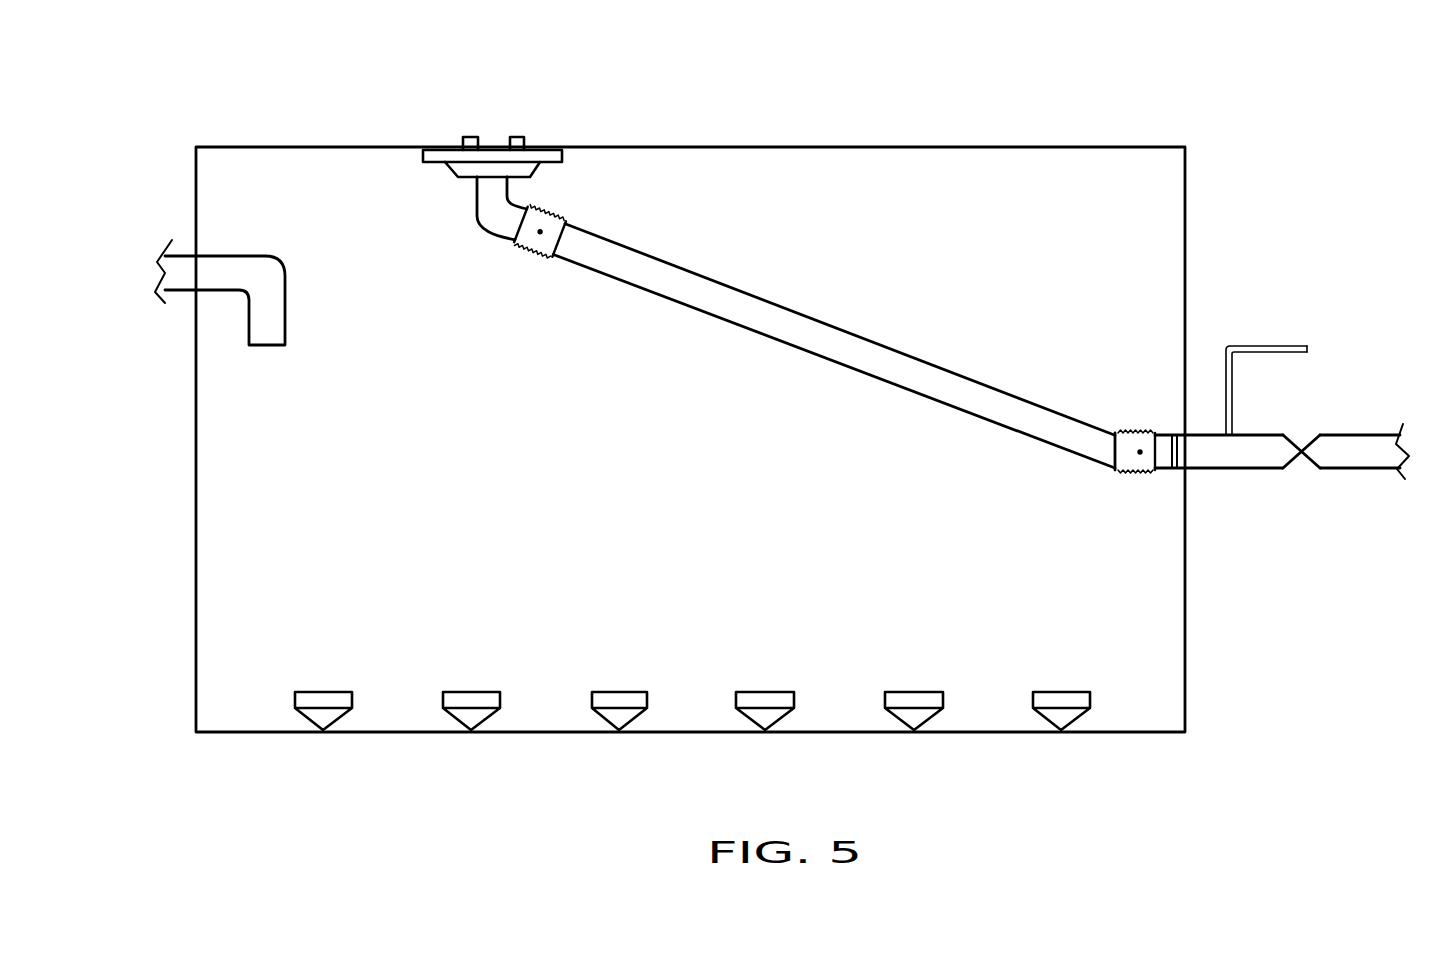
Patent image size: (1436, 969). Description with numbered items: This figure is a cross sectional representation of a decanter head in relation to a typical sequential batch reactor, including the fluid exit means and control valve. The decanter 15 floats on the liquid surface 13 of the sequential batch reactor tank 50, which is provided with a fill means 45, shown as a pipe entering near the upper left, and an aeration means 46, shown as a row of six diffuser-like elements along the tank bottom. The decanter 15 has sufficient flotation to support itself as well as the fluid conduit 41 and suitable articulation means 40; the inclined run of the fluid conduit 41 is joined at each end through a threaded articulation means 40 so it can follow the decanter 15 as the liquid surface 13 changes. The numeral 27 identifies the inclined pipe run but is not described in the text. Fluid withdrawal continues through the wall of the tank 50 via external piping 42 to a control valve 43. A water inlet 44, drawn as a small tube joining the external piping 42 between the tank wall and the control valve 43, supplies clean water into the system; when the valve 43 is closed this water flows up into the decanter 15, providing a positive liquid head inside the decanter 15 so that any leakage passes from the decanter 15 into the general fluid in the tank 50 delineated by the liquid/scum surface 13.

The liquid surface 13 is at (877, 147).
The decanter 15 is at (552, 144).
The inclined pipe 27 is at (703, 273).
The articulation means 40 is at (545, 253).
The fluid conduit 41 is at (481, 229).
The external piping 42 is at (1225, 468).
The control valve 43 is at (1302, 438).
The water inlet 44 is at (1307, 348).
The fill means 45 is at (278, 346).
The aeration means 46 is at (619, 692).
The sequential batch reactor tank 50 is at (1192, 205).